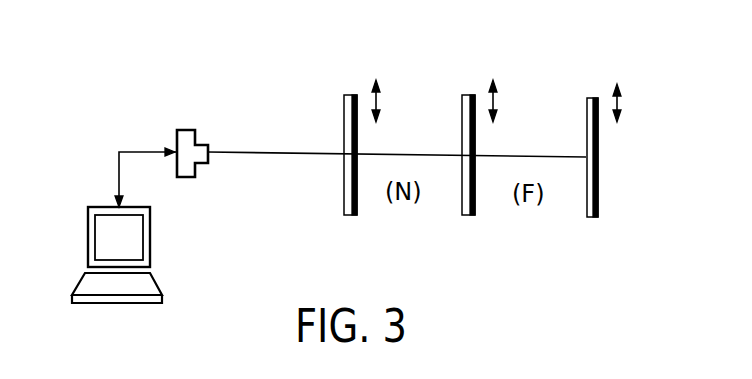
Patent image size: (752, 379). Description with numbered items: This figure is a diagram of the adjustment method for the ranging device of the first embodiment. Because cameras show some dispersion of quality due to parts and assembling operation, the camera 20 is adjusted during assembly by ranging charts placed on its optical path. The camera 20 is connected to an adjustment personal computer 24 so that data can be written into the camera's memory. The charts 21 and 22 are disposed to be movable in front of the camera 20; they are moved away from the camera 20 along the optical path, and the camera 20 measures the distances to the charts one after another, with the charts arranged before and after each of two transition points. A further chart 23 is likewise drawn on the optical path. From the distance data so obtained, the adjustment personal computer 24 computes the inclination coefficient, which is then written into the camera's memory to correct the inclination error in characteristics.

The camera 20 is at (188, 128).
The chart 21 is at (344, 217).
The chart 22 is at (467, 217).
The first lens group L1 23 is at (590, 219).
The adjustment personal computer 24 is at (153, 238).